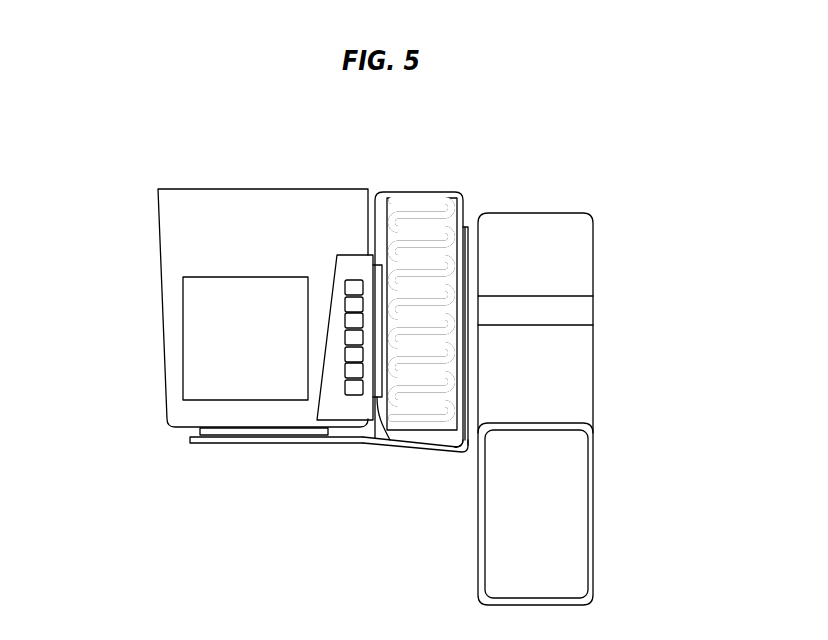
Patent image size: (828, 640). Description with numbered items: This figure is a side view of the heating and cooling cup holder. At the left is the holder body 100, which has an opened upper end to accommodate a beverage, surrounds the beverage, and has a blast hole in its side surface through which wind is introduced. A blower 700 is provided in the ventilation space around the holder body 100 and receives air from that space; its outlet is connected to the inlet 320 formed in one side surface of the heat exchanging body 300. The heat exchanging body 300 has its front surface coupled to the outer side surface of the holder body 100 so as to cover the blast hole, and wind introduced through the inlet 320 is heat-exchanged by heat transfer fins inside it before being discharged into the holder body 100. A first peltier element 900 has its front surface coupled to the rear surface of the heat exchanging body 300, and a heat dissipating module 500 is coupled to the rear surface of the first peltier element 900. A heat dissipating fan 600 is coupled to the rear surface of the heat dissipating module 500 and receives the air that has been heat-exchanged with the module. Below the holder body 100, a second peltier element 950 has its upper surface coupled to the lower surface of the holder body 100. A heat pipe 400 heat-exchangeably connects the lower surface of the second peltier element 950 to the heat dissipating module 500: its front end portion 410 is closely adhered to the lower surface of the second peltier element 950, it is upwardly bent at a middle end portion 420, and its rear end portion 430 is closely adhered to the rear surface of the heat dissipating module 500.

The holder body 100 is at (239, 200).
The heat exchanging body 300 is at (340, 314).
The inlet 320 is at (352, 380).
The heat pipe 400 is at (363, 448).
The front end portion 410 is at (210, 443).
The middle end portion 420 is at (460, 452).
The rear end portion 430 is at (466, 232).
The heat dissipating module 500 is at (424, 215).
The heat dissipating fan 600 is at (582, 383).
The blower 700 is at (200, 340).
The first peltier element 900 is at (393, 447).
The second peltier element 950 is at (267, 443).